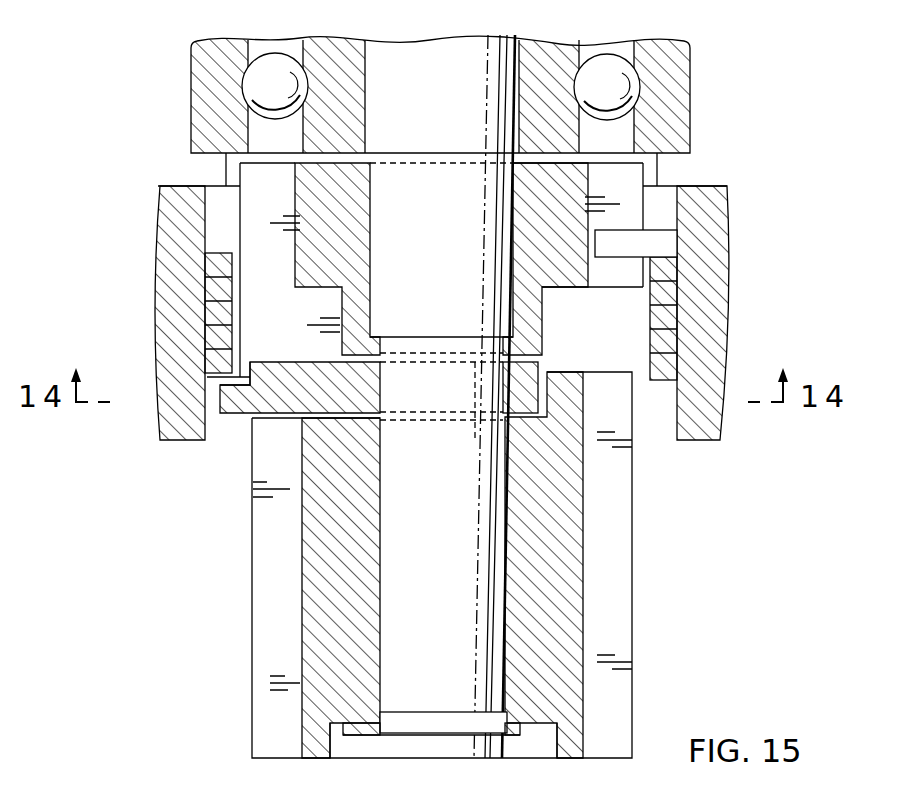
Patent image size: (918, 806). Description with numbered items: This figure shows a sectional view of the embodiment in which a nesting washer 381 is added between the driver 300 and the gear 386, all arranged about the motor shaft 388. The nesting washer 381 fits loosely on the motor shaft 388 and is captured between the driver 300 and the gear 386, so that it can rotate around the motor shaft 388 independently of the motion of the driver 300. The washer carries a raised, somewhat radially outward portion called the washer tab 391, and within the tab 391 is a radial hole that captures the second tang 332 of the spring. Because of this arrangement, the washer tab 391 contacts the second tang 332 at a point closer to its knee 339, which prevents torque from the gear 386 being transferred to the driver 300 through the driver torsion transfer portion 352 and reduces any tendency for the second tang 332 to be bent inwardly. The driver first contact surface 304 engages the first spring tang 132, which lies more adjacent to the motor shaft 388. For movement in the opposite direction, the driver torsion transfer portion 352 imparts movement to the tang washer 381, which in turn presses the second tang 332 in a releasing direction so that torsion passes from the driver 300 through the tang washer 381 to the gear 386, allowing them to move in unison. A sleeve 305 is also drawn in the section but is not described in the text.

The sleeve 305 is at (248, 207).
The driver torsion transfer portion 352 is at (232, 240).
The washer tab 391 is at (232, 330).
The nesting washer 381 is at (318, 362).
The motor shaft 388 is at (455, 207).
The driver 300 is at (553, 322).
The driver first contact surface 304 is at (625, 270).
The first spring tang 132 is at (650, 243).
The second tang 332 is at (385, 387).
The knee 339 is at (215, 388).
The gear 386 is at (640, 653).